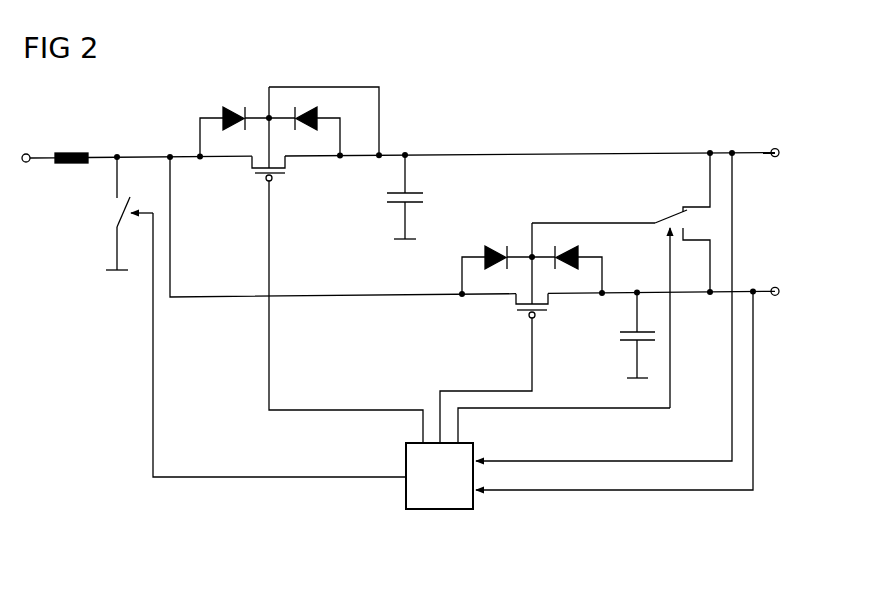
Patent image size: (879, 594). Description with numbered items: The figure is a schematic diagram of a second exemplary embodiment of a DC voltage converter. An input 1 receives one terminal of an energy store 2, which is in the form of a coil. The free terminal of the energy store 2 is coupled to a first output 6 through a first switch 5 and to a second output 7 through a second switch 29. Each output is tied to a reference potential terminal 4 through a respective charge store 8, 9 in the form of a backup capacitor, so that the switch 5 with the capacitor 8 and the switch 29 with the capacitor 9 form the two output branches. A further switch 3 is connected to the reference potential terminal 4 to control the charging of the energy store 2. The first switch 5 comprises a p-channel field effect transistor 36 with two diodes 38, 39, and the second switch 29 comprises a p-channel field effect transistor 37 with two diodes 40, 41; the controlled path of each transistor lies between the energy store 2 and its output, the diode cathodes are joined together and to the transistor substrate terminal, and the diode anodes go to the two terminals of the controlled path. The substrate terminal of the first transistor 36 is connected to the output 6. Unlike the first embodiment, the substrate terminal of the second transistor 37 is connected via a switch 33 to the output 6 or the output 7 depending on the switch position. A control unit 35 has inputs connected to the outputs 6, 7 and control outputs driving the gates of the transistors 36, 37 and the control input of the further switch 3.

The input 1 is at (27, 153).
The energy store 2 is at (73, 152).
The further switch 3 is at (122, 215).
The reference potential terminal 4 is at (107, 273).
The first switch 5 is at (216, 79).
The first output 6 is at (773, 148).
The second output 7 is at (773, 287).
The charge store 8 is at (387, 196).
The charge store 9 is at (620, 336).
The second switch 29 is at (504, 222).
The switch 33 is at (682, 213).
The control unit 35 is at (435, 511).
The first field effect transistor 36 is at (252, 172).
The second field effect transistor 37 is at (516, 309).
The diode 38 is at (223, 115).
The diode 39 is at (320, 114).
The diode 40 is at (485, 252).
The diode 41 is at (580, 252).